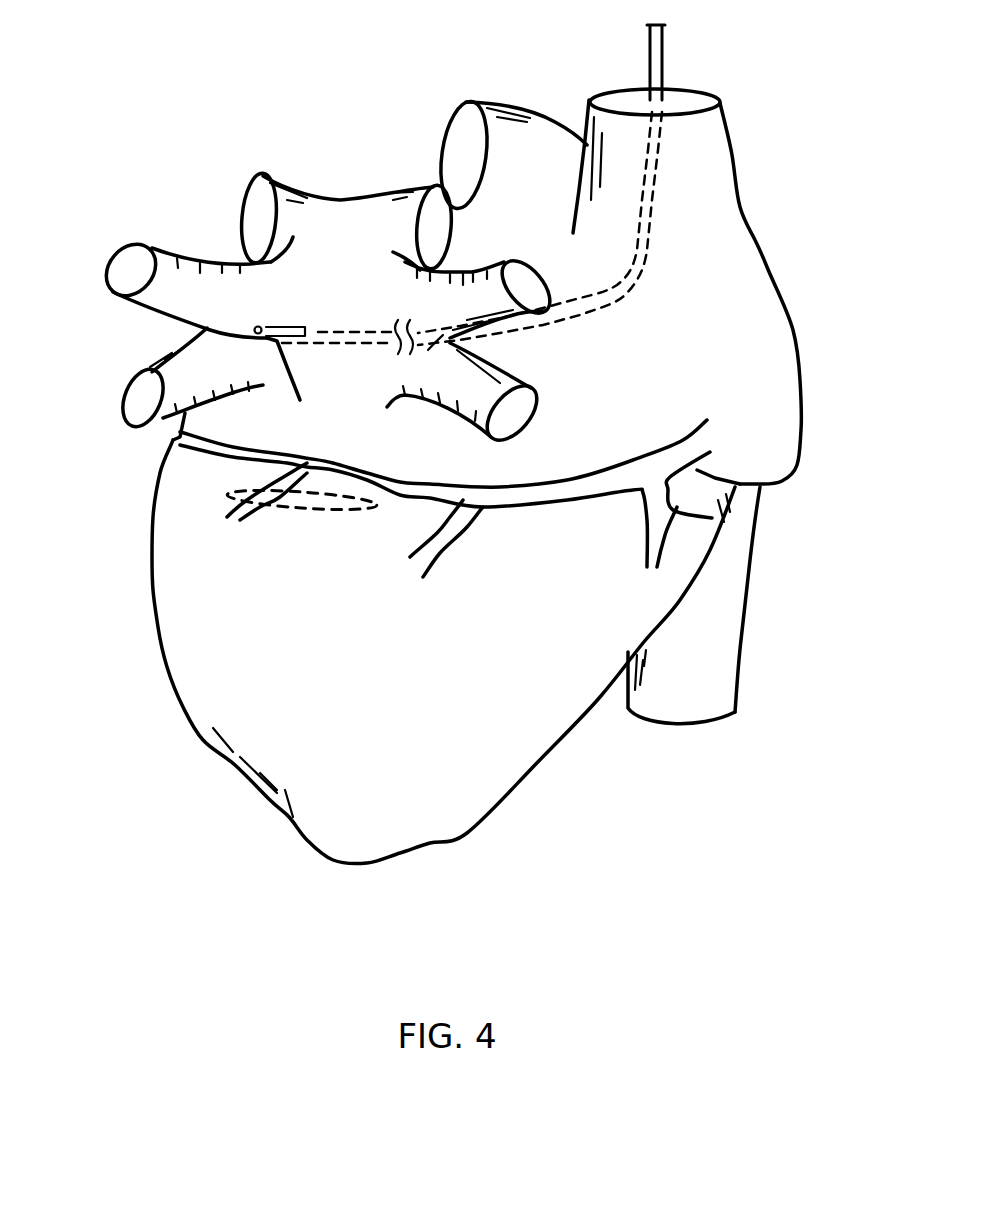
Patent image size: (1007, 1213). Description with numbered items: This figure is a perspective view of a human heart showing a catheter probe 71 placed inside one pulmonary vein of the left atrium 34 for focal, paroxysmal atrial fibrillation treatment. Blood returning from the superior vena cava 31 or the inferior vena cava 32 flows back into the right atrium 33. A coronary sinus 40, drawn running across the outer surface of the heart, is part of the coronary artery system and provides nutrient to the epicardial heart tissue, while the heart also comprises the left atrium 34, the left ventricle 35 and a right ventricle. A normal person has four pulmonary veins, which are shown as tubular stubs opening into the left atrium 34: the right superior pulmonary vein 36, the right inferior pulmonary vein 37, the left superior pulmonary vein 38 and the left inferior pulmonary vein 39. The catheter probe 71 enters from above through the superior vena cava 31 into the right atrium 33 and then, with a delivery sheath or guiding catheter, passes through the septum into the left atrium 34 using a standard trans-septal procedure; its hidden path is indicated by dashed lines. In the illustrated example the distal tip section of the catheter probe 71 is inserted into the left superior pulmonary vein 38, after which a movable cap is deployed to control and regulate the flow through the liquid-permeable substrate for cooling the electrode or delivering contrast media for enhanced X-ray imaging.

The superior vena cava 31 is at (707, 127).
The inferior vena cava 32 is at (738, 657).
The right atrium 33 is at (727, 330).
The left atrium 34 is at (327, 267).
The left ventricle 35 is at (257, 588).
The right superior pulmonary vein 36 is at (467, 277).
The right inferior pulmonary vein 37 is at (497, 372).
The left superior pulmonary vein 38 is at (170, 252).
The left inferior pulmonary vein 39 is at (165, 355).
The coronary sinus 40 is at (700, 443).
The catheter probe 71 is at (667, 63).